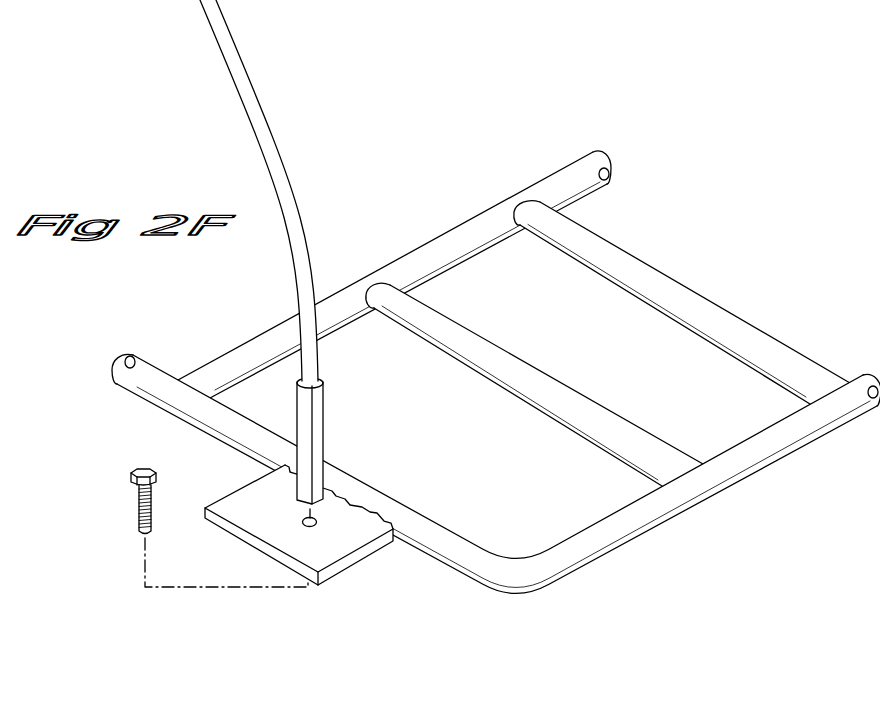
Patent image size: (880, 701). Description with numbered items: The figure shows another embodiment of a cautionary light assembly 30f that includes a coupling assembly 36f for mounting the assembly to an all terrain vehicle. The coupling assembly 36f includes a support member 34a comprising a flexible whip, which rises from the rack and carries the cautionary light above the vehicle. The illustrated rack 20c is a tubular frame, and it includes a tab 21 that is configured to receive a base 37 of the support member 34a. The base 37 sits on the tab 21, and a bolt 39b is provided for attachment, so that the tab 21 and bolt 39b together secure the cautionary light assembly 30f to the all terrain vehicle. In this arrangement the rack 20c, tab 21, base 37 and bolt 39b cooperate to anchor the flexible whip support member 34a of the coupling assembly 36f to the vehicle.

The support member 34a is at (240, 54).
The cautionary light assembly 30f is at (496, 301).
The base 37 is at (320, 438).
The coupling assembly 36f is at (275, 482).
The rack 20c is at (667, 503).
The tab 21 is at (240, 503).
The bolt 39b is at (138, 510).